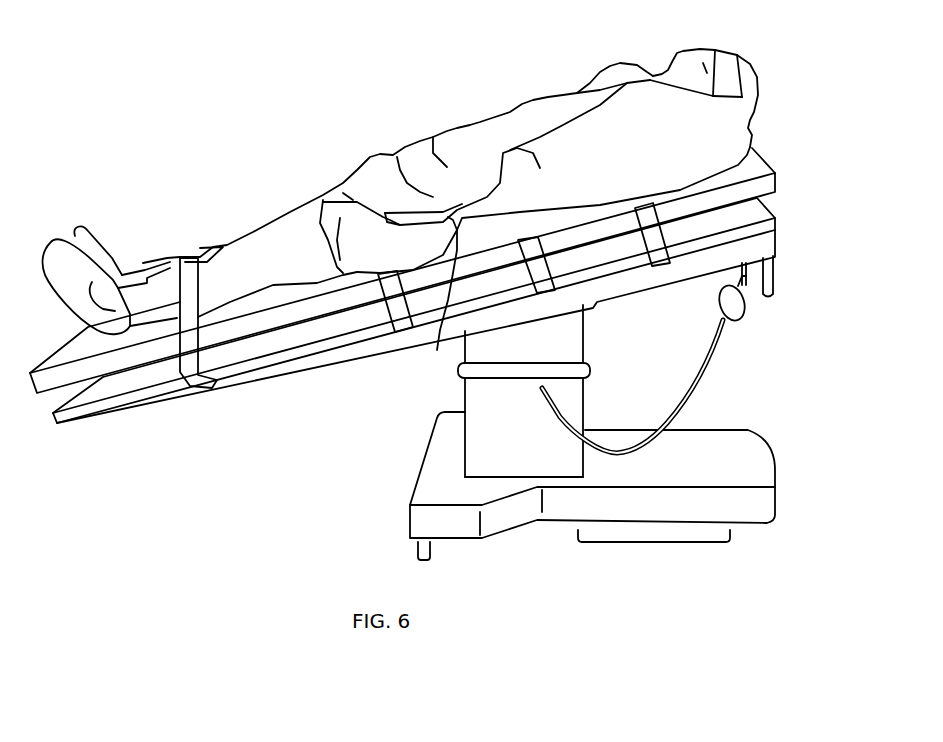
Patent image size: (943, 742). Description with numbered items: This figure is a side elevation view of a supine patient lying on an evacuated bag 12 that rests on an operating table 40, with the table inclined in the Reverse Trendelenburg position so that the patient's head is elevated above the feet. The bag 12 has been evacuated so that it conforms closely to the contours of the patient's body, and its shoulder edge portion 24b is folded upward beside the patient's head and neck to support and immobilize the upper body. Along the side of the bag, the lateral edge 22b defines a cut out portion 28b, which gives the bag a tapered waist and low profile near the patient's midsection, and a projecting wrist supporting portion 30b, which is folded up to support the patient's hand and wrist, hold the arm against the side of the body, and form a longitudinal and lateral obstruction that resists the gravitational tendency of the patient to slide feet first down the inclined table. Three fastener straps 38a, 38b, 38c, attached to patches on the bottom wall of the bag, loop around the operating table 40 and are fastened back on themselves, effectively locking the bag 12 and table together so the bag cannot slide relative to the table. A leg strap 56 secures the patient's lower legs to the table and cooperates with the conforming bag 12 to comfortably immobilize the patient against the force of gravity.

The bag 12 is at (757, 138).
The lateral edge 22b is at (557, 124).
The shoulder edge portion 24b is at (750, 67).
The cut out portion 28b is at (437, 350).
The wrist supporting portion 30b is at (350, 198).
The fastener strap 38a is at (660, 267).
The fastener strap 38b is at (545, 295).
The fastener strap 38c is at (403, 334).
The operating table 40 is at (810, 247).
The leg strap 56 is at (214, 245).